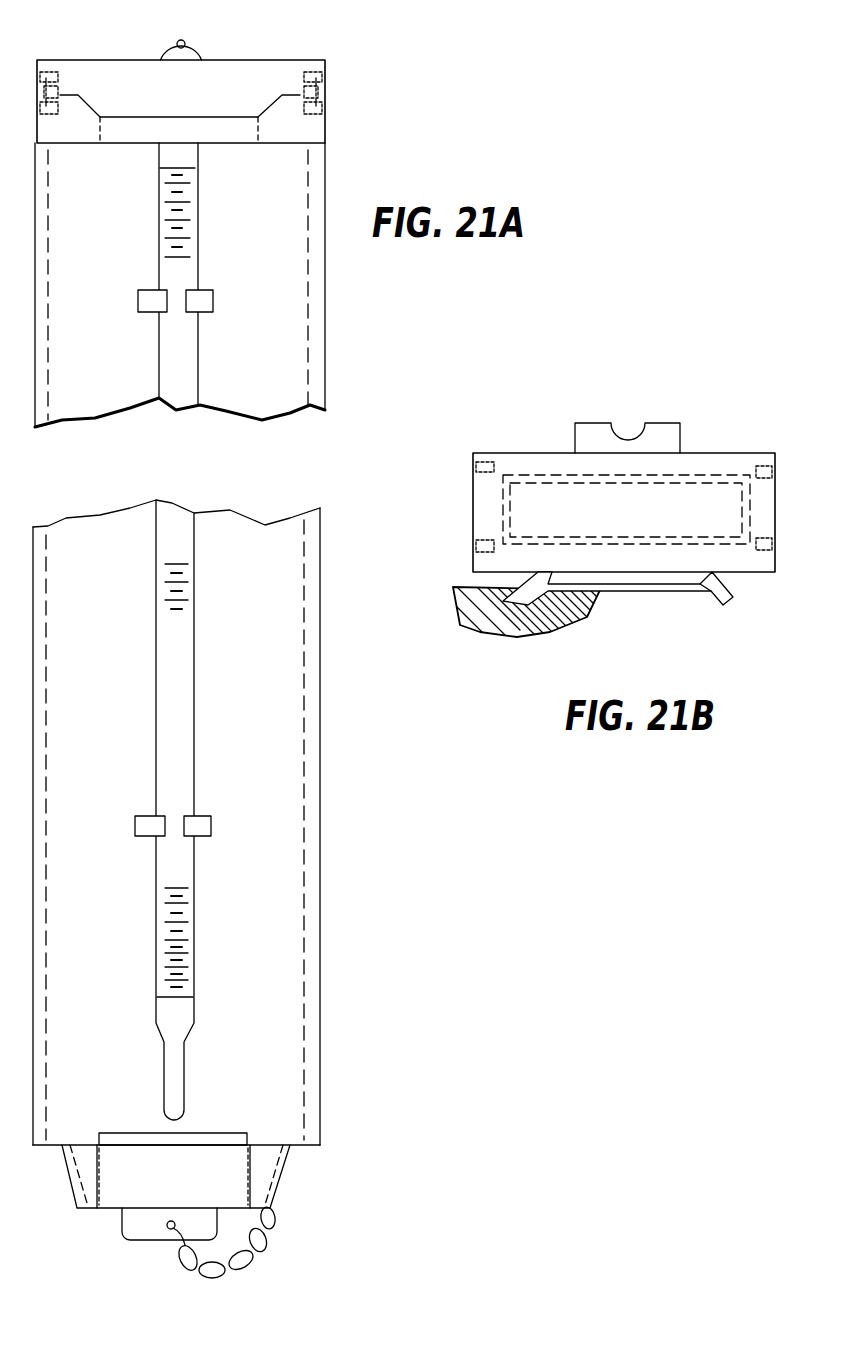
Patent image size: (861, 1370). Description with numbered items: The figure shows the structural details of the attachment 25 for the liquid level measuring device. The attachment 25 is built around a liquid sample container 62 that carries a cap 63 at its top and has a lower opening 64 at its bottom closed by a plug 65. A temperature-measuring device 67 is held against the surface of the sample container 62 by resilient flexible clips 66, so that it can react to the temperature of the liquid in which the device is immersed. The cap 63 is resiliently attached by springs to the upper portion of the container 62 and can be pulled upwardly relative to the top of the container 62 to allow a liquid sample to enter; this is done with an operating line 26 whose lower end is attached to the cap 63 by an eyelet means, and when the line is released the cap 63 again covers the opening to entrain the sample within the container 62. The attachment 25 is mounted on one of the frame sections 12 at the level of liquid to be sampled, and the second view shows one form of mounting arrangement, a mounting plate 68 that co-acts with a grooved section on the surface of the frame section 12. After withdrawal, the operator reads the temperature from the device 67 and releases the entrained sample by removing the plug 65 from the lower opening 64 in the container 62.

In FIG. 21B, the frame section 12 is at (528, 627).
In FIG. 21A, the attachment 25 is at (211, 889).
In FIG. 21A, the operating line 26 is at (181, 2).
In FIG. 21A, the liquid sample container 62 is at (312, 672).
In FIG. 21A, the cap 63 is at (325, 62).
In FIG. 21B, the cap 63 is at (767, 507).
In FIG. 21A, the lower opening 64 is at (105, 1215).
In FIG. 21A, the plug 65 is at (225, 1197).
In FIG. 21B, the resilient flexible clips 66 is at (676, 437).
In FIG. 21A, the temperature-measuring device 67 is at (181, 757).
In FIG. 21B, the mounting plate 68 is at (717, 600).